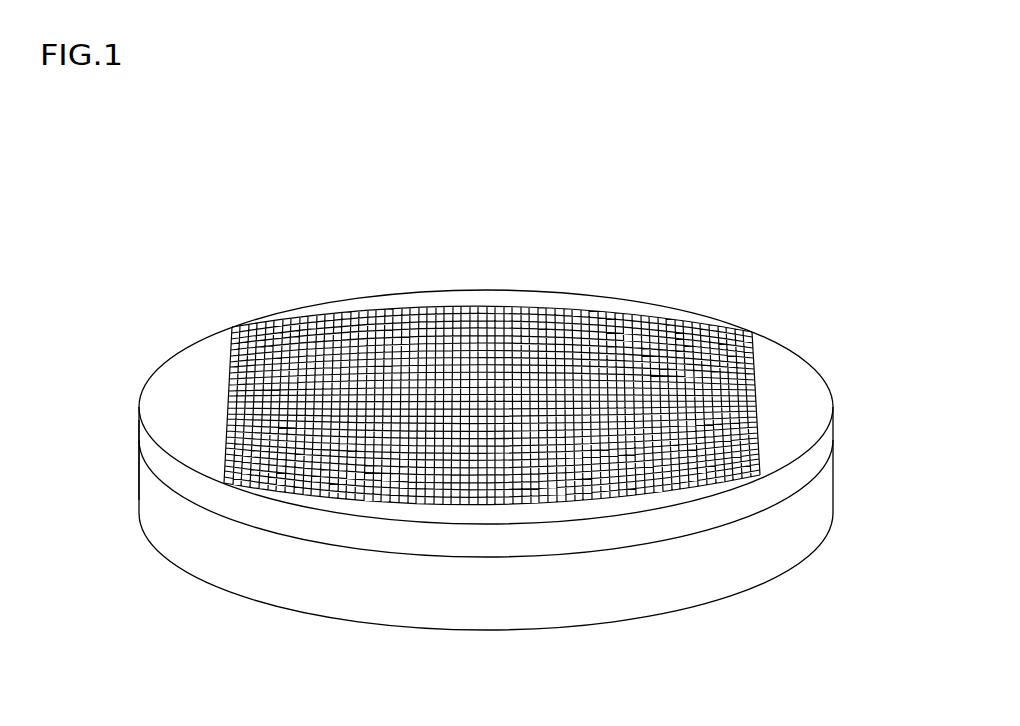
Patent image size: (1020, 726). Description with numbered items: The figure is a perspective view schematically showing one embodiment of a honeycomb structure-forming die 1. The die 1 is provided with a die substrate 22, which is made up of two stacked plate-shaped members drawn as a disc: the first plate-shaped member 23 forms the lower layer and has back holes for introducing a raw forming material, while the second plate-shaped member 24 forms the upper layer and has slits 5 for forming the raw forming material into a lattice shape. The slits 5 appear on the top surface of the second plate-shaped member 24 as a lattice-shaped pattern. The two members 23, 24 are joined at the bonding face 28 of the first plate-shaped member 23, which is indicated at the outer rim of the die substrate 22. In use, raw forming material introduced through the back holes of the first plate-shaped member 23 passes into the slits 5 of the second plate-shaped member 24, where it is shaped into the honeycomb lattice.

The honeycomb structure-forming die 1 is at (614, 192).
The slits 5 is at (479, 305).
The die substrate 22 is at (878, 422).
The first plate-shaped member 23 is at (829, 491).
The second plate-shaped member 24 is at (829, 435).
The bonding face 28 is at (138, 461).